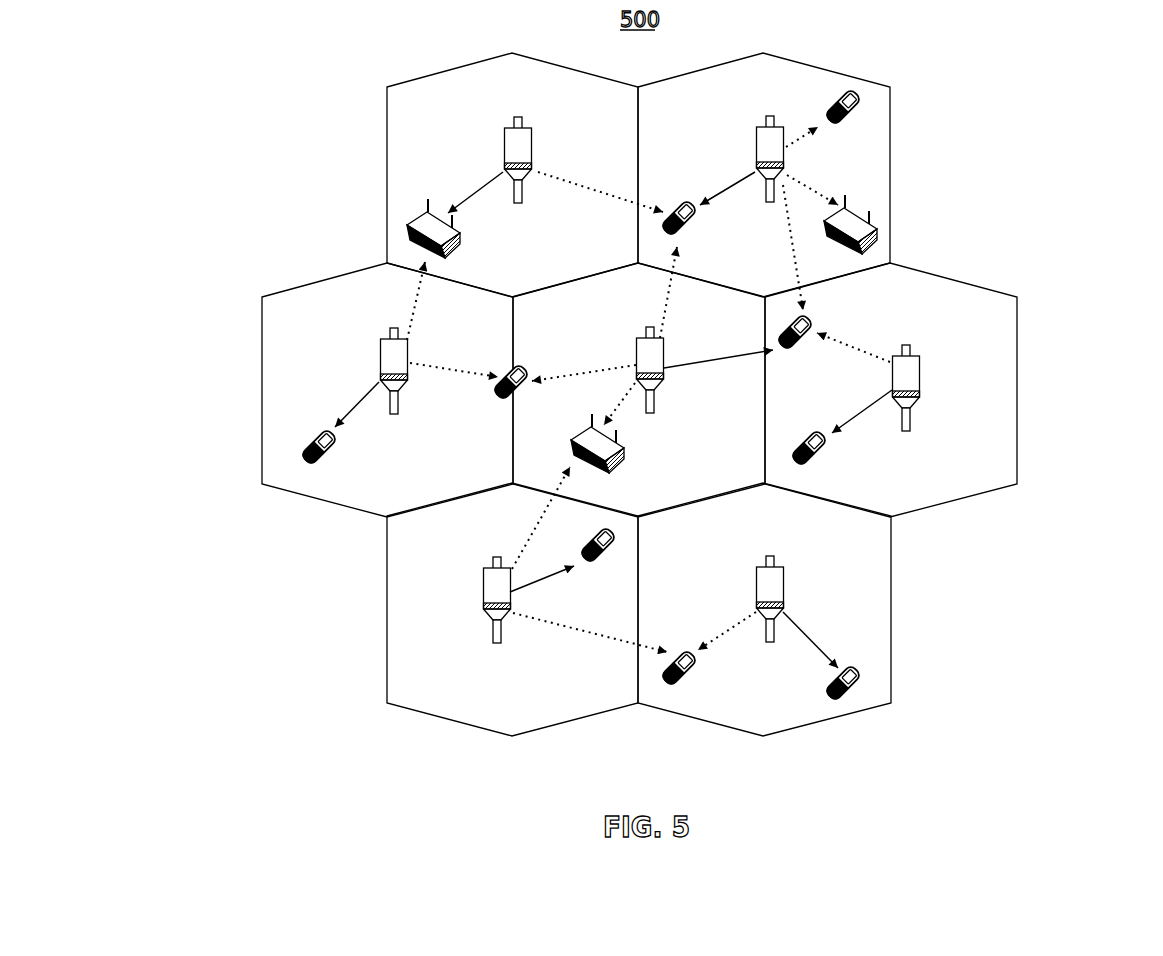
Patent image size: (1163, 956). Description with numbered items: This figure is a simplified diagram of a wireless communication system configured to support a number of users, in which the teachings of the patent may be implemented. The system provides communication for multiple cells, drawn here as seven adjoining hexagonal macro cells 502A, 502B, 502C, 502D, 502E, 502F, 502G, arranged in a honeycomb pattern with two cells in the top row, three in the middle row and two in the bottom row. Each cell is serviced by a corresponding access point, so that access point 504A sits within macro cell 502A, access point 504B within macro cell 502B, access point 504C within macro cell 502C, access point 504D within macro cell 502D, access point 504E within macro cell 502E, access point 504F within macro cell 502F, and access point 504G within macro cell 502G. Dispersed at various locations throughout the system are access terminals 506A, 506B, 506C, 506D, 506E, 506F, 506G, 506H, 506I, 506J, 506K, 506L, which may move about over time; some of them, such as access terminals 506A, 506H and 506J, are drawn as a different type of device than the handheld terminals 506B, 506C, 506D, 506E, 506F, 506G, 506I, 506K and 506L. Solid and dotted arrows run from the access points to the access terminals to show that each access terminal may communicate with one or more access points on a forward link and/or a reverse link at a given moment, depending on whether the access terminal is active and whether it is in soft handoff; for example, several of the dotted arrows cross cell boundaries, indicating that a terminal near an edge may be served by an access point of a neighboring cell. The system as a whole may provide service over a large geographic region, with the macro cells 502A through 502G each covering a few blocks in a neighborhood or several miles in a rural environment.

The macro cell 502A is at (460, 67).
The macro cell 502B is at (765, 53).
The macro cell 502C is at (260, 390).
The macro cell 502D is at (639, 390).
The macro cell 502E is at (1018, 385).
The macro cell 502F is at (387, 603).
The macro cell 502G is at (891, 610).
The access point 504A is at (515, 117).
The access point 504B is at (768, 116).
The access point 504C is at (391, 330).
The access point 504D is at (648, 328).
The access point 504E is at (904, 345).
The access point 504F is at (496, 557).
The access point 504G is at (768, 557).
The access terminal 506A is at (458, 249).
The access terminal 506B is at (697, 208).
The access terminal 506C is at (335, 440).
The access terminal 506D is at (512, 366).
The access terminal 506E is at (810, 322).
The access terminal 506F is at (617, 538).
The access terminal 506G is at (690, 678).
The access terminal 506H is at (852, 230).
The access terminal 506I is at (838, 104).
The access terminal 506J is at (610, 460).
The access terminal 506K is at (827, 445).
The access terminal 506L is at (847, 700).